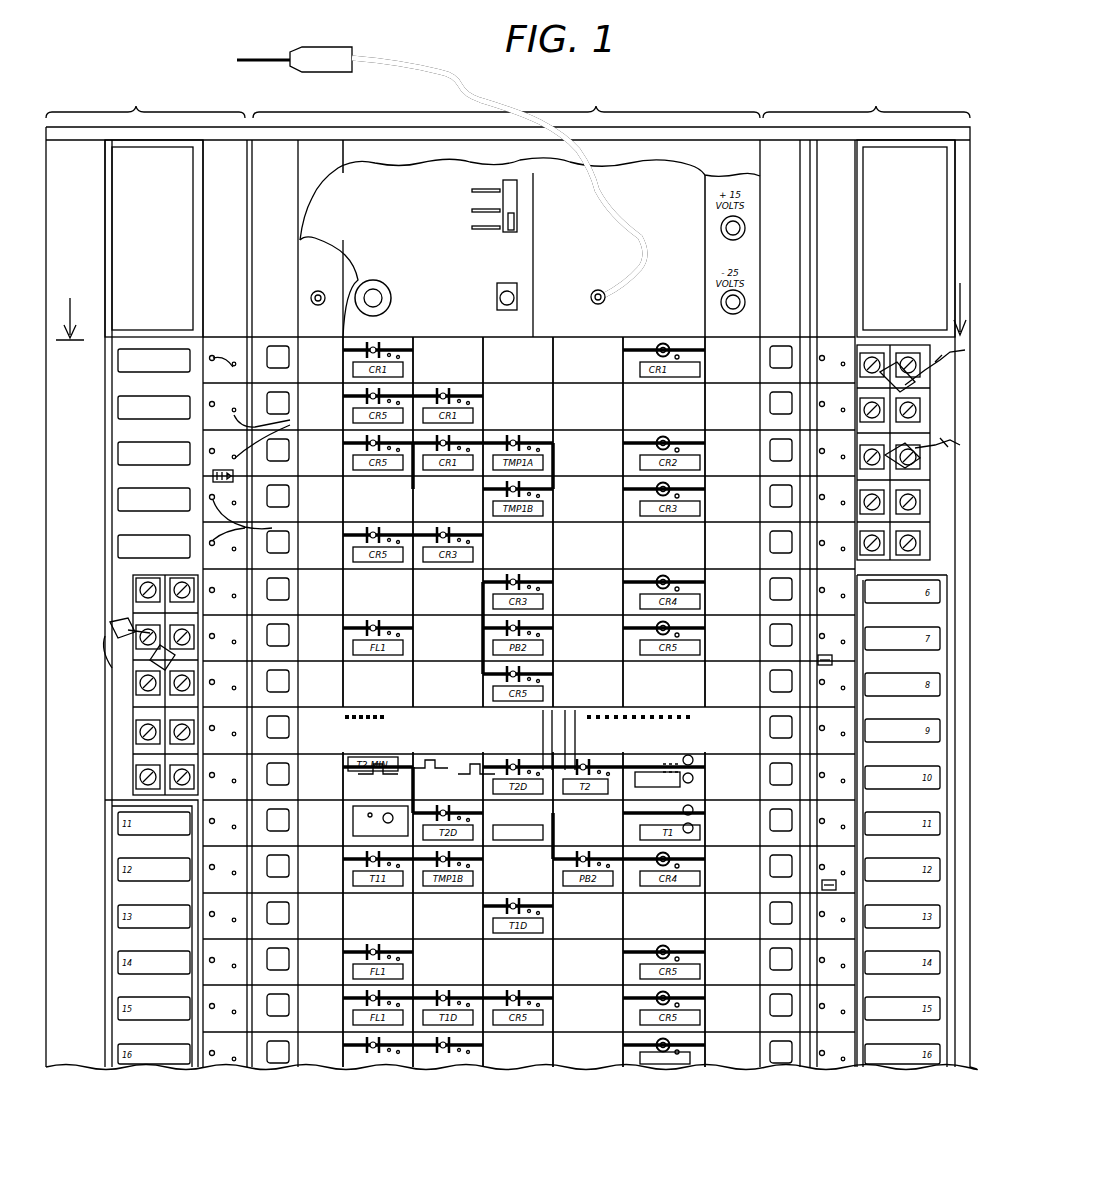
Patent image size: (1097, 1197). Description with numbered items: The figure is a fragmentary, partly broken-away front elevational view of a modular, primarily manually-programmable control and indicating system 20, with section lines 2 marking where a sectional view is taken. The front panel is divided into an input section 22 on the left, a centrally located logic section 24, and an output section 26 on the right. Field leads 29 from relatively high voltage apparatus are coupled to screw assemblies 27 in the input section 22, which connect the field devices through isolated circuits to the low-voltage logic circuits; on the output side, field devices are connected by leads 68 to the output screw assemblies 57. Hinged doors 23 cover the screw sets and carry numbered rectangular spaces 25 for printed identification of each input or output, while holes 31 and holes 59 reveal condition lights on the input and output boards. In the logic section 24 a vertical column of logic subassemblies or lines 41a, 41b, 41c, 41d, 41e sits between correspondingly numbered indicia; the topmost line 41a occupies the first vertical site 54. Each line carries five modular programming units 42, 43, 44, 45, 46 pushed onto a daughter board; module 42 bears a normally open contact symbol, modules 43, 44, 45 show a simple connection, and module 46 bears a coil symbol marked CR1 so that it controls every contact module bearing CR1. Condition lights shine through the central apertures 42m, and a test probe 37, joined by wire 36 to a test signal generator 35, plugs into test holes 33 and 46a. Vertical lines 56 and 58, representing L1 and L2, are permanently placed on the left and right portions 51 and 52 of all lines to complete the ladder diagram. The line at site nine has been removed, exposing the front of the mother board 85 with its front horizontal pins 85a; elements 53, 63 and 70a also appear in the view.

The section line 2 is at (511, 306).
The modular control and indicating system 20 is at (772, 88).
The input section 22 is at (145, 206).
The hinged door 23 is at (127, 388).
The logic section 24 is at (506, 206).
The numbered rectangular space 25 is at (125, 352).
The output section 26 is at (866, 206).
The screw assembly 27 is at (148, 594).
The electrical lead 29 is at (116, 644).
The hole 31 is at (213, 355).
The test hole 33 is at (282, 431).
The test signal generator 35 is at (540, 243).
The wire 36 is at (436, 68).
The test probe 37 is at (330, 50).
The logic subassembly 41a is at (648, 348).
The logic subassembly 41b is at (664, 406).
The logic subassembly 41c is at (588, 453).
The logic subassembly 41d is at (588, 499).
The logic subassembly 41e is at (588, 545).
The modular programming unit 42 is at (375, 345).
The central aperture 42m is at (390, 316).
The modular programming unit 43 is at (455, 345).
The modular programming unit 44 is at (538, 345).
The modular programming unit 45 is at (563, 347).
The modular programming unit 46 is at (686, 348).
The test hole 46a is at (680, 360).
The left portion 51 is at (305, 340).
The right portion 52 is at (745, 352).
The connector plug 53 is at (235, 480).
The vertical site 54 is at (315, 348).
The vertical line 56 is at (340, 610).
The output screw assembly 57 is at (910, 512).
The vertical line 58 is at (708, 610).
The hole 59 is at (838, 632).
The output plug 63 is at (818, 660).
The lead 68 is at (905, 458).
The interconnecting wires 70a is at (580, 712).
The mother board 85 is at (524, 729).
The front horizontal pin 85a is at (368, 714).